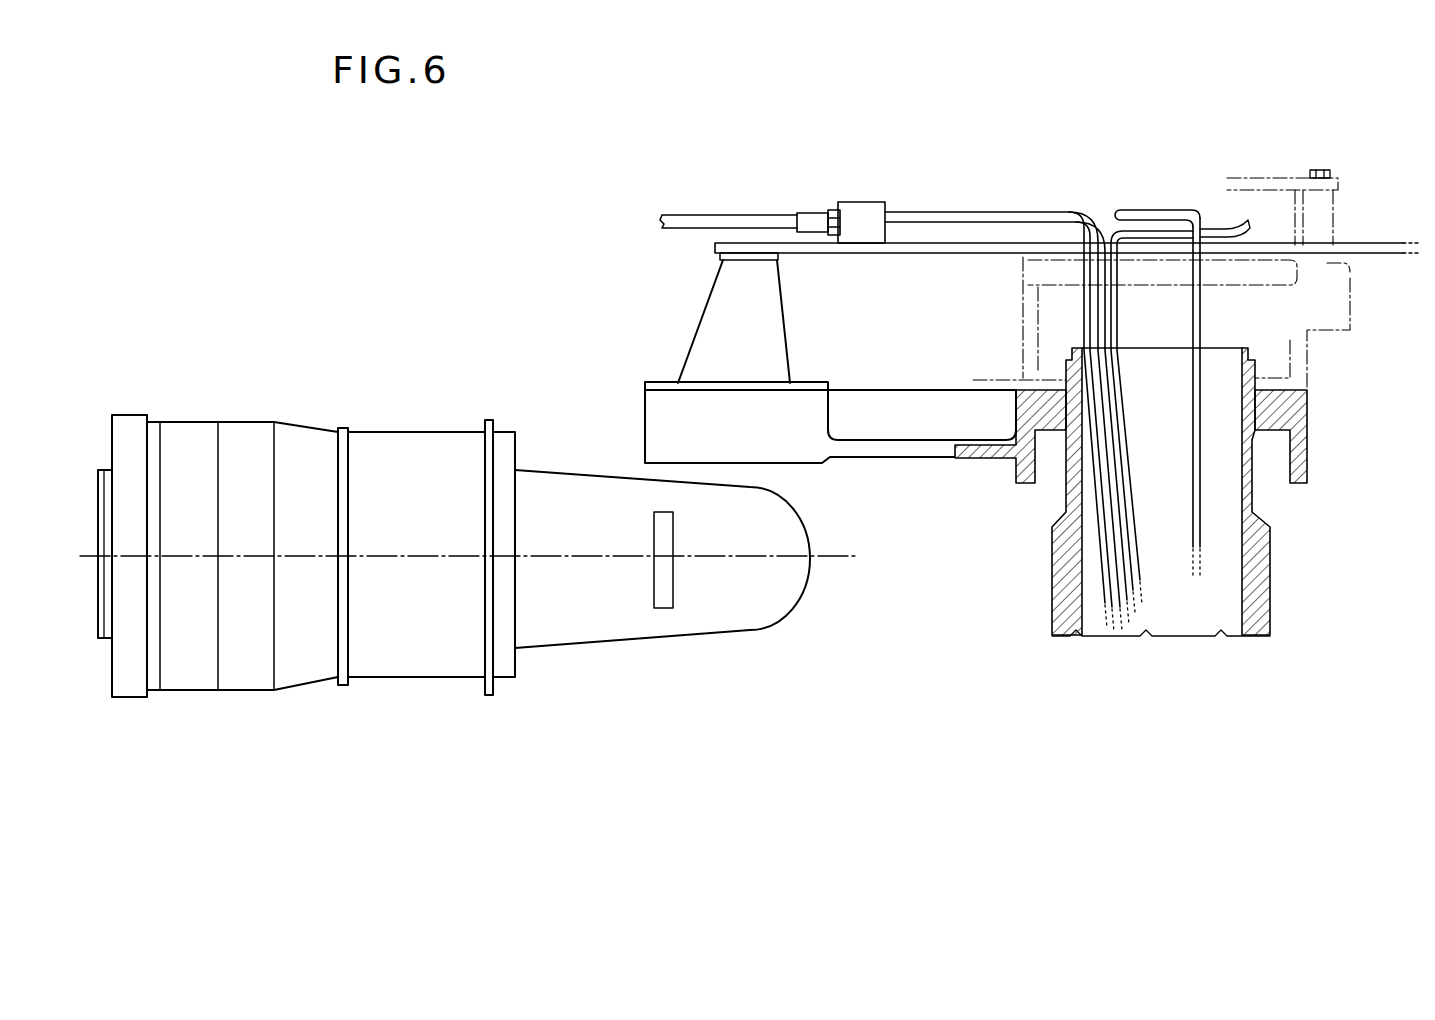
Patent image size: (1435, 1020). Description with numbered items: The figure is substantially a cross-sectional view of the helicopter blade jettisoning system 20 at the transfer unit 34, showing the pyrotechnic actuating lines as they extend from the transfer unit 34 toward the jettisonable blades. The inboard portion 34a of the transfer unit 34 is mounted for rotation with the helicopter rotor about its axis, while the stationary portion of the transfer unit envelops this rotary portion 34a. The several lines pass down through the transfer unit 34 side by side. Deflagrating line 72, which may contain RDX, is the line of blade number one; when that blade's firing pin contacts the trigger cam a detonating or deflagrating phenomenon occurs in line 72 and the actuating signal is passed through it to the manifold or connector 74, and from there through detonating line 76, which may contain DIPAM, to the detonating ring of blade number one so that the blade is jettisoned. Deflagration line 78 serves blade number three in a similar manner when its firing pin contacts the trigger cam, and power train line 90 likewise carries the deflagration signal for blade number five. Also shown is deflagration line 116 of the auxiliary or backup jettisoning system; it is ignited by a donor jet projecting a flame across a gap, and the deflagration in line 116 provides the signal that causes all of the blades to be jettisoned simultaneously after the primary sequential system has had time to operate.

The helicopter blade jettisoning system 20 is at (1367, 322).
The transfer unit 34 is at (1353, 275).
The inboard portion of transfer unit 34a is at (1218, 252).
The deflagrating line 72 is at (1089, 313).
The manifold or connector 74 is at (861, 212).
The detonating line 76 is at (688, 221).
The deflagration line 78 is at (1118, 325).
The power train line 90 is at (1200, 322).
The deflagration line 116 is at (1107, 297).